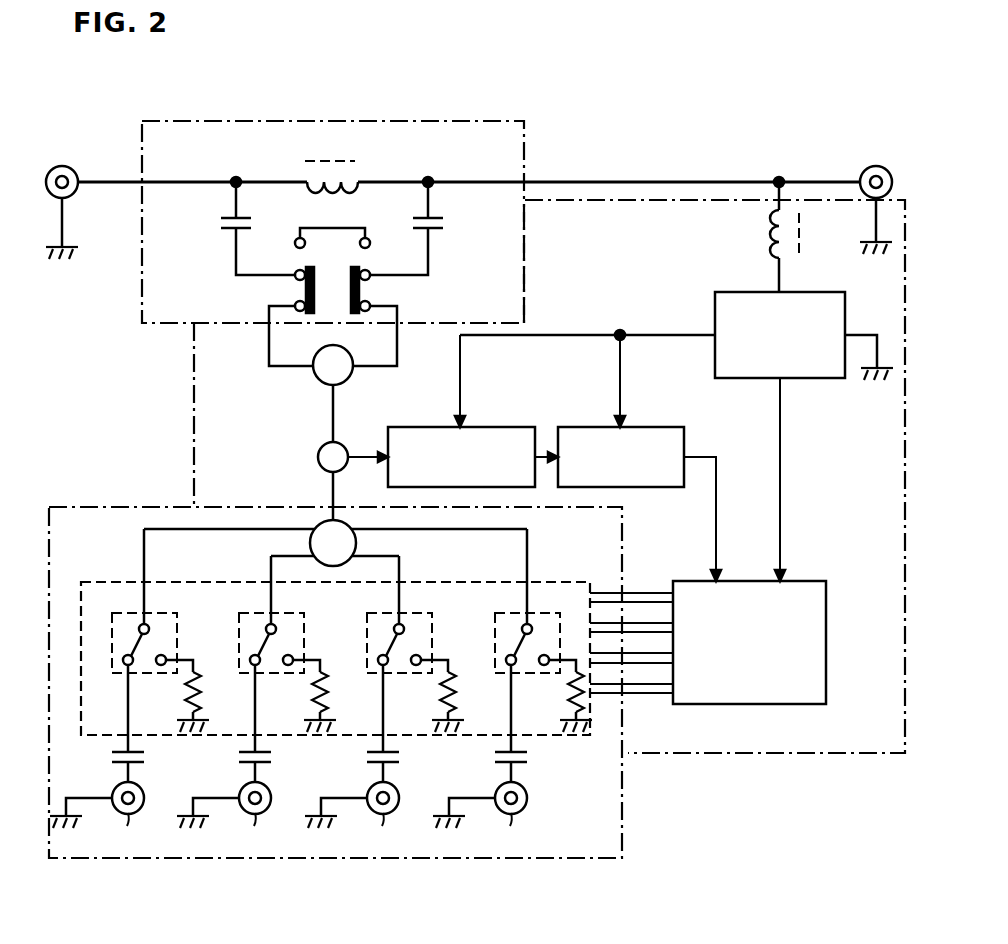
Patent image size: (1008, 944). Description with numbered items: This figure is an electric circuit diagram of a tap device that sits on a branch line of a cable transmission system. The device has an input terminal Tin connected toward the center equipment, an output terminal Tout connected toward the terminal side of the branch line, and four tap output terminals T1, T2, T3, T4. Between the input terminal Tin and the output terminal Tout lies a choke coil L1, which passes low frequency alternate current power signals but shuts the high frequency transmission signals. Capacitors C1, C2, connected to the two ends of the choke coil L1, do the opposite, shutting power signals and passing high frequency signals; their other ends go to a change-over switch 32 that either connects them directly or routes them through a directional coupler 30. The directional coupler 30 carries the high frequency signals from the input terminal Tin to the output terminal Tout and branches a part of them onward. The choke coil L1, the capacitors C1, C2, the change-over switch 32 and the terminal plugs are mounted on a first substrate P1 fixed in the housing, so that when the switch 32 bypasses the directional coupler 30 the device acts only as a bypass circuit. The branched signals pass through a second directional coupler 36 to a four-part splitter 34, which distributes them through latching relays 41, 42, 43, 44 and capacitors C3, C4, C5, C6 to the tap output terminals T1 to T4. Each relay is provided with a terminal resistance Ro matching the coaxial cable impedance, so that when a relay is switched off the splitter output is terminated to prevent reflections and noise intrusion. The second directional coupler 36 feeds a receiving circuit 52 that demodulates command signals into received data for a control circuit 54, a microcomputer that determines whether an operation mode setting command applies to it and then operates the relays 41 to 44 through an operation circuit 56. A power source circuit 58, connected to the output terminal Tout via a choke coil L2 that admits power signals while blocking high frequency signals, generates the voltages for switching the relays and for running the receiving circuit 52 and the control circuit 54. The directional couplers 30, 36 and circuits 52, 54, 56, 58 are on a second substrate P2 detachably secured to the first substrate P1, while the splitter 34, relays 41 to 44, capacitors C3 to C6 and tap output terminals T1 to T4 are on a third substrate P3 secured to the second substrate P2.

The input terminal Tin is at (63, 166).
The output terminal Tout is at (882, 166).
The choke coil L1 is at (333, 166).
The choke coil L2 is at (800, 234).
The capacitor C1 is at (224, 226).
The capacitor C2 is at (445, 226).
The capacitor C3 is at (147, 756).
The capacitor C4 is at (274, 756).
The capacitor C5 is at (402, 756).
The capacitor C6 is at (530, 756).
The directional coupler 30 is at (320, 378).
The change-over switch 32 is at (372, 288).
The splitter 34 is at (358, 541).
The second directional coupler 36 is at (317, 457).
The latching relay 41 is at (156, 612).
The latching relay 42 is at (283, 612).
The latching relay 43 is at (411, 612).
The latching relay 44 is at (539, 612).
The terminal resistance Ro is at (188, 691).
The receiving circuit 52 is at (412, 426).
The control circuit 54 is at (575, 426).
The operation circuit 56 is at (828, 627).
The power source circuit 58 is at (726, 291).
The tap output terminal T1 is at (97, 819).
The tap output terminal T2 is at (224, 819).
The tap output terminal T3 is at (352, 819).
The tap output terminal T4 is at (480, 819).
The first substrate P1 is at (527, 131).
The second substrate P2 is at (790, 754).
The third substrate P3 is at (625, 803).